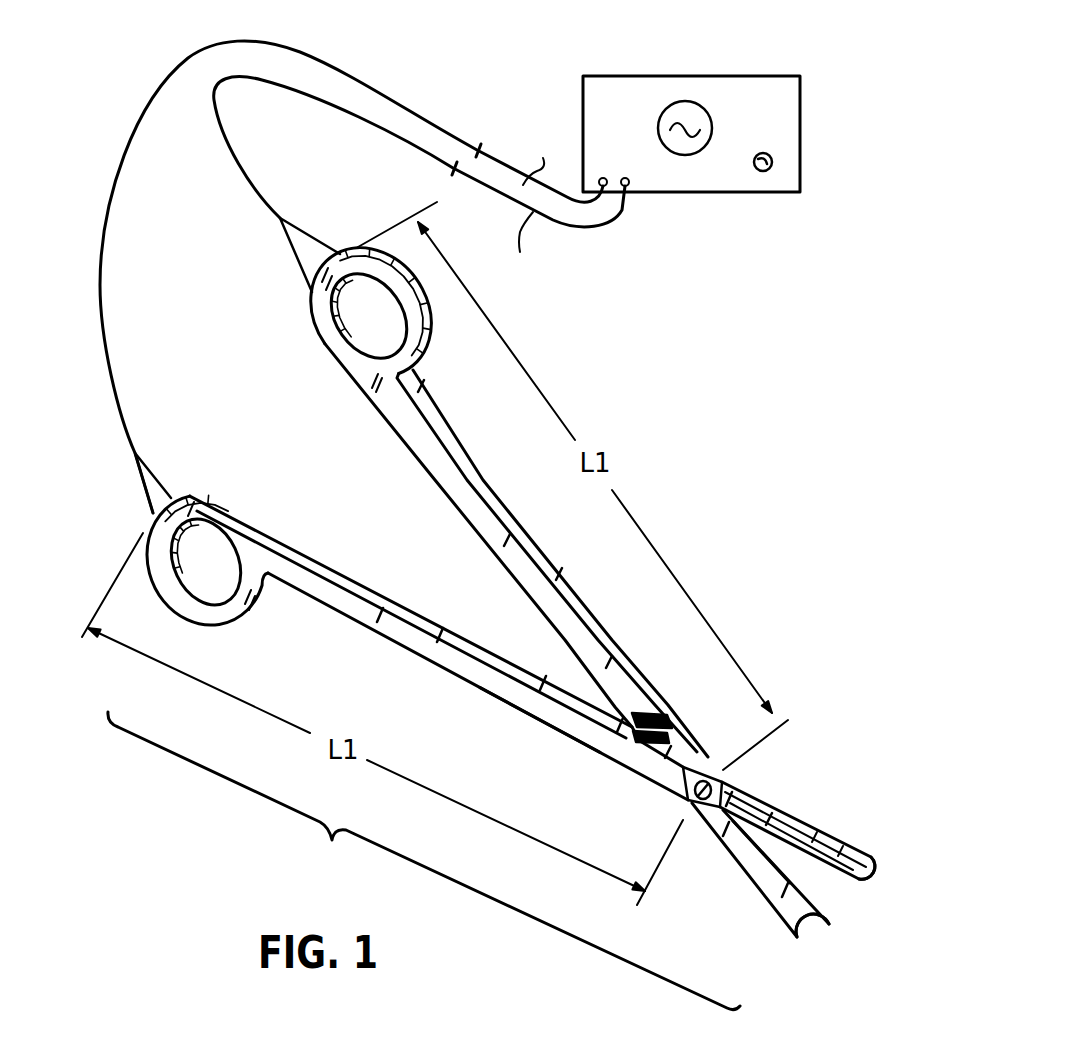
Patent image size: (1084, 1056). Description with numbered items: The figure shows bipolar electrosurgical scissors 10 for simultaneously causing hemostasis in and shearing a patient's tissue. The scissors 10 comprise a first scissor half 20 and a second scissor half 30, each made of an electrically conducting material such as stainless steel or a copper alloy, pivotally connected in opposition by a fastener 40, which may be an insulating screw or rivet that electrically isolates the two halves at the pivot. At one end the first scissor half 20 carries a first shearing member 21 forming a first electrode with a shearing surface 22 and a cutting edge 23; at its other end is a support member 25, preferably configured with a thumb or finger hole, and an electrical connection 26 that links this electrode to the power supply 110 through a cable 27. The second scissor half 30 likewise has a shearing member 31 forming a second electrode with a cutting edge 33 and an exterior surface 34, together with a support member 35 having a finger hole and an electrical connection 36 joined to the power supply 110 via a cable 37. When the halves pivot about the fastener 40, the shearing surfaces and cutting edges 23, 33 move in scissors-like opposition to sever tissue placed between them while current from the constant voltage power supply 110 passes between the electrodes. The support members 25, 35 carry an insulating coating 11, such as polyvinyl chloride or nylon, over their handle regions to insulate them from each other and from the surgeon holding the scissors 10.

The bipolar electrosurgical scissors 10 is at (424, 861).
The insulating coating 11 is at (534, 711).
The first scissor half 20 is at (421, 403).
The first shearing member 21 is at (750, 877).
The shearing surface 22 is at (745, 847).
The cutting edge 23 is at (803, 897).
The support member 25 is at (537, 583).
The electrical connection 26 is at (294, 250).
The cable 27 is at (241, 173).
The second scissor half 30 is at (323, 573).
The shearing member 31 is at (820, 838).
The cutting edge 33 is at (870, 899).
The exterior surface 34 is at (775, 823).
The support member 35 is at (435, 642).
The electrical connection 36 is at (143, 496).
The cable 37 is at (120, 410).
The fastener 40 is at (708, 769).
The power supply 110 is at (675, 82).